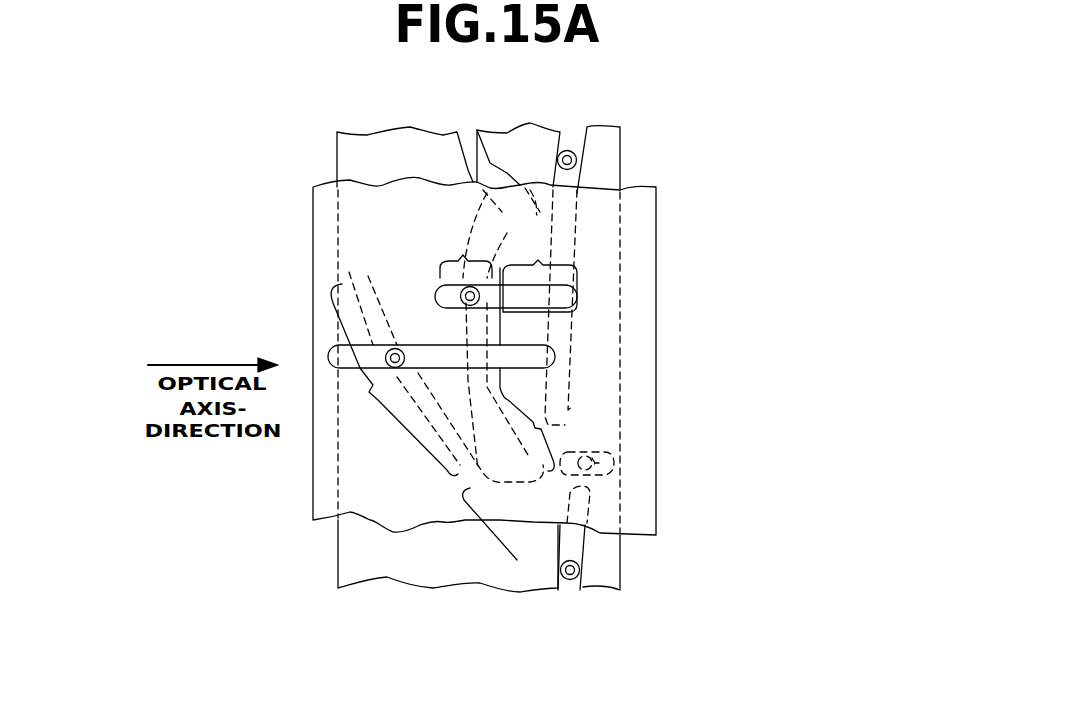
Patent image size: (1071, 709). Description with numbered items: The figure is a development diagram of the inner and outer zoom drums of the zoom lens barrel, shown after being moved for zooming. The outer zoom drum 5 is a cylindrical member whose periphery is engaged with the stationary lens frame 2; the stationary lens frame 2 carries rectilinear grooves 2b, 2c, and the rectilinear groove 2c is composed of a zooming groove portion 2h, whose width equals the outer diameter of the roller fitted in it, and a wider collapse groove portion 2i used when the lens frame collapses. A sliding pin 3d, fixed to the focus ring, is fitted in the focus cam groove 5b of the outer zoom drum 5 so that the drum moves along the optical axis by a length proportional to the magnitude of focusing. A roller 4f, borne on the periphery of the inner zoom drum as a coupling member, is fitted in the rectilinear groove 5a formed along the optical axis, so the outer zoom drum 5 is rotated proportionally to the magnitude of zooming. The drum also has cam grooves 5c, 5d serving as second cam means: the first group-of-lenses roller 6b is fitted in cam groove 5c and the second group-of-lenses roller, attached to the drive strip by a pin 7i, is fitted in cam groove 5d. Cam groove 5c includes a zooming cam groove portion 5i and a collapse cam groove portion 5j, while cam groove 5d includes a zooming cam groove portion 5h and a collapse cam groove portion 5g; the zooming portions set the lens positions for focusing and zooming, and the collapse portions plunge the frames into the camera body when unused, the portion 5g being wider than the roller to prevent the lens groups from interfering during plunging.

The stationary lens frame 2 is at (643, 203).
The rectilinear groove 2b is at (435, 345).
The rectilinear groove 2c is at (627, 264).
The zooming groove portion 2h is at (488, 252).
The collapse groove portion 2i is at (505, 262).
The sliding pin 3d is at (576, 151).
The roller 4f is at (616, 454).
The outer zoom drum 5 is at (608, 550).
The rectilinear groove 5a is at (590, 487).
The focus cam groove 5b is at (588, 133).
The cam groove 5c is at (316, 471).
The cam groove 5d is at (668, 307).
The collapse cam groove portion 5g is at (573, 406).
The zooming cam groove portion 5h is at (500, 323).
The zooming cam groove portion 5i is at (367, 395).
The collapse cam groove portion 5j is at (482, 522).
The first group-of-lenses roller 6b is at (350, 346).
The pin 7i is at (577, 297).